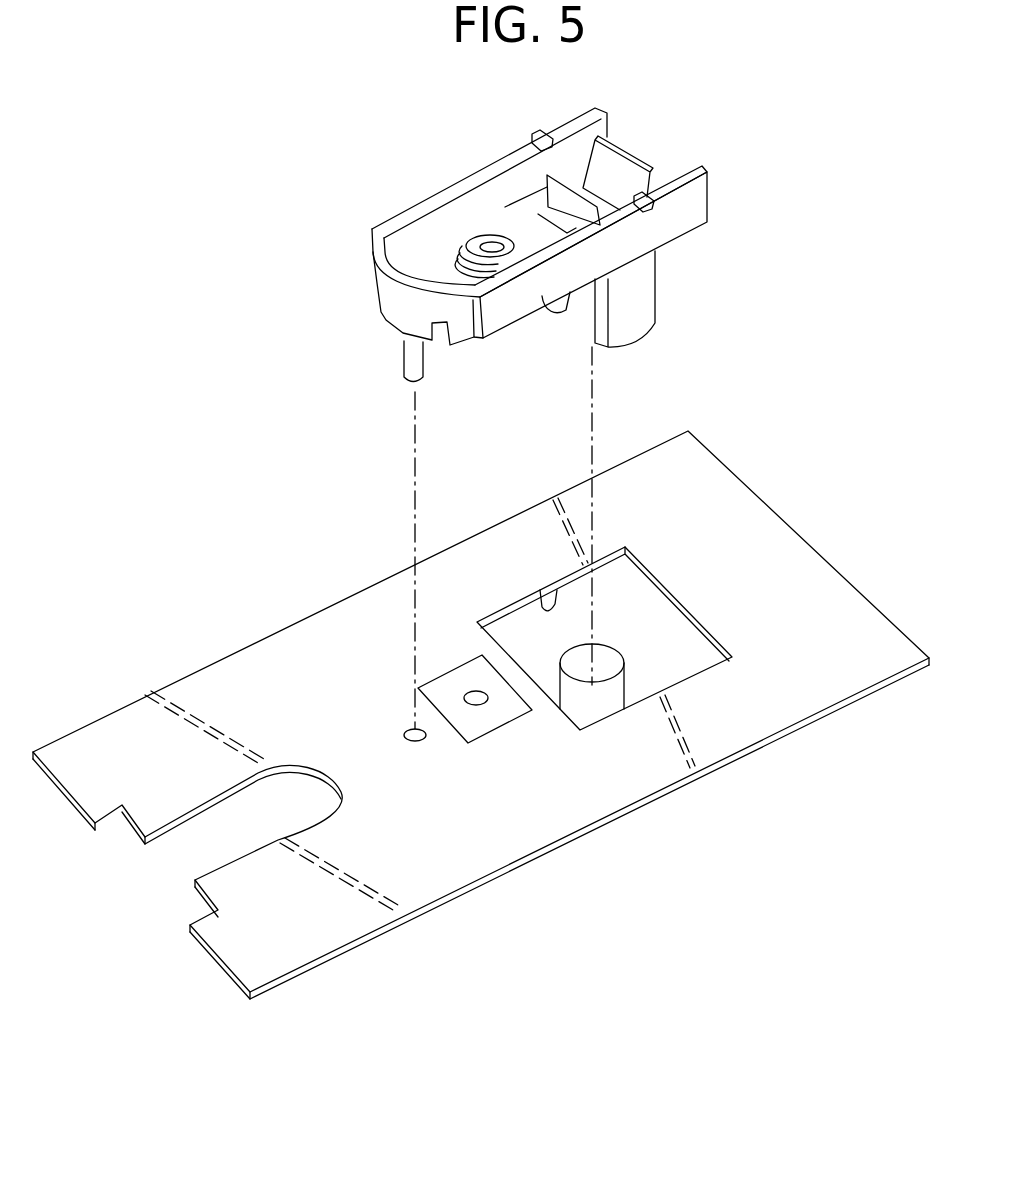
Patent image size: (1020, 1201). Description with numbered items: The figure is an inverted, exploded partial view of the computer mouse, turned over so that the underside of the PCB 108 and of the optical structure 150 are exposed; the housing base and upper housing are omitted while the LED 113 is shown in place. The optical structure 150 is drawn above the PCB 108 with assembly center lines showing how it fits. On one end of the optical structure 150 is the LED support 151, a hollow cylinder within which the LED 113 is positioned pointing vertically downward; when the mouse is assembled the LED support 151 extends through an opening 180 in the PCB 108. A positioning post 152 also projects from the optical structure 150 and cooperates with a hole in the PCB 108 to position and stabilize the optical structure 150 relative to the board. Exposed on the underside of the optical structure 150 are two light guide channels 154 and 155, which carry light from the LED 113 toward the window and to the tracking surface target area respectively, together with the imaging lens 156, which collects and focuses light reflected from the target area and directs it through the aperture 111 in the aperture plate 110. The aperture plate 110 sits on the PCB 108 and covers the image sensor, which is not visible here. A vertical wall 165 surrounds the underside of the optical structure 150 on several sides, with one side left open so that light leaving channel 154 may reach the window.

The PCB 108 is at (627, 792).
The aperture plate 110 is at (494, 723).
The aperture 111 is at (472, 690).
The LED 113 is at (627, 678).
The opening 180 is at (543, 590).
The optical structure 150 is at (343, 242).
The LED support 151 is at (660, 288).
The positioning post 152 is at (412, 365).
The light guide channel 154 is at (632, 158).
The light guide channel 155 is at (572, 178).
The imaging lens 156 is at (487, 248).
The vertical wall 165 is at (455, 208).